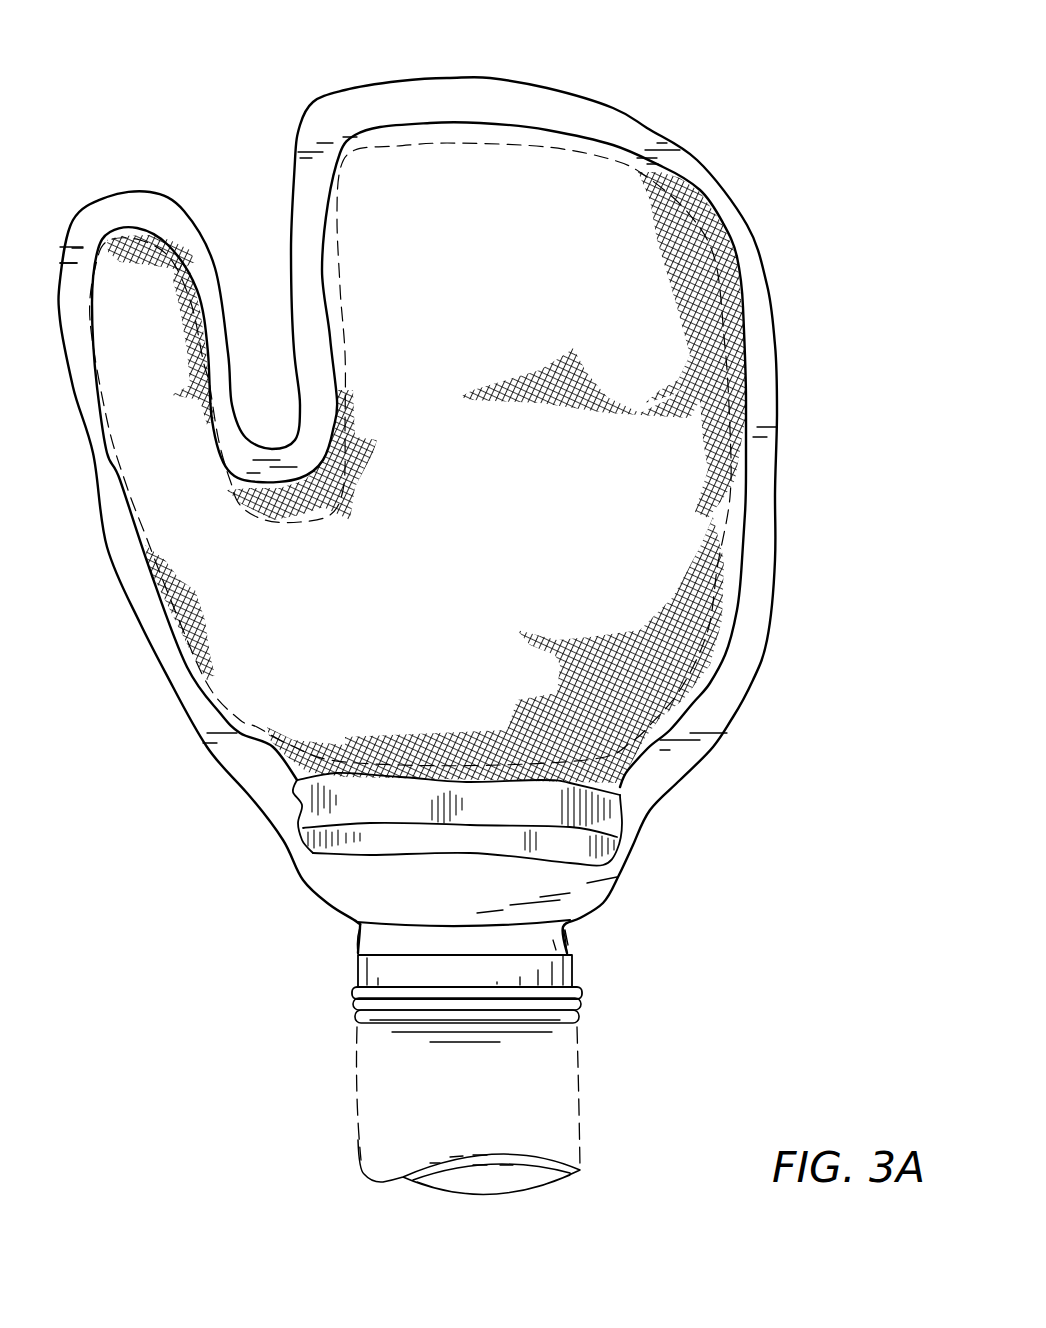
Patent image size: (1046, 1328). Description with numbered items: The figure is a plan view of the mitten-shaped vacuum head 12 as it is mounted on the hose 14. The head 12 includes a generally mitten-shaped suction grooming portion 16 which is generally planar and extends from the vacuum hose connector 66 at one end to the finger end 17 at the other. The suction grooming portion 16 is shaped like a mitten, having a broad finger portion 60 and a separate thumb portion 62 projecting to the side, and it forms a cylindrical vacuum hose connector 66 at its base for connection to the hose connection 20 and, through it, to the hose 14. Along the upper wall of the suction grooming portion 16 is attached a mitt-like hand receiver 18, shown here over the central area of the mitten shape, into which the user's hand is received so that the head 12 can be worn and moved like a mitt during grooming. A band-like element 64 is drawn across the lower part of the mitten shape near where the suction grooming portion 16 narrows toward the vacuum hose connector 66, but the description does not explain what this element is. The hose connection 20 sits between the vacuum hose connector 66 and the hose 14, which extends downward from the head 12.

The vacuum head 12 is at (706, 150).
The hose 14 is at (460, 1124).
The suction grooming portion 16 is at (150, 658).
The finger end 17 is at (522, 80).
The hand receiver 18 is at (520, 566).
The hose connection 20 is at (358, 968).
The finger portion 60 is at (776, 322).
The thumb portion 62 is at (128, 194).
The cuff 64 is at (618, 820).
The vacuum hose connector 66 is at (568, 934).